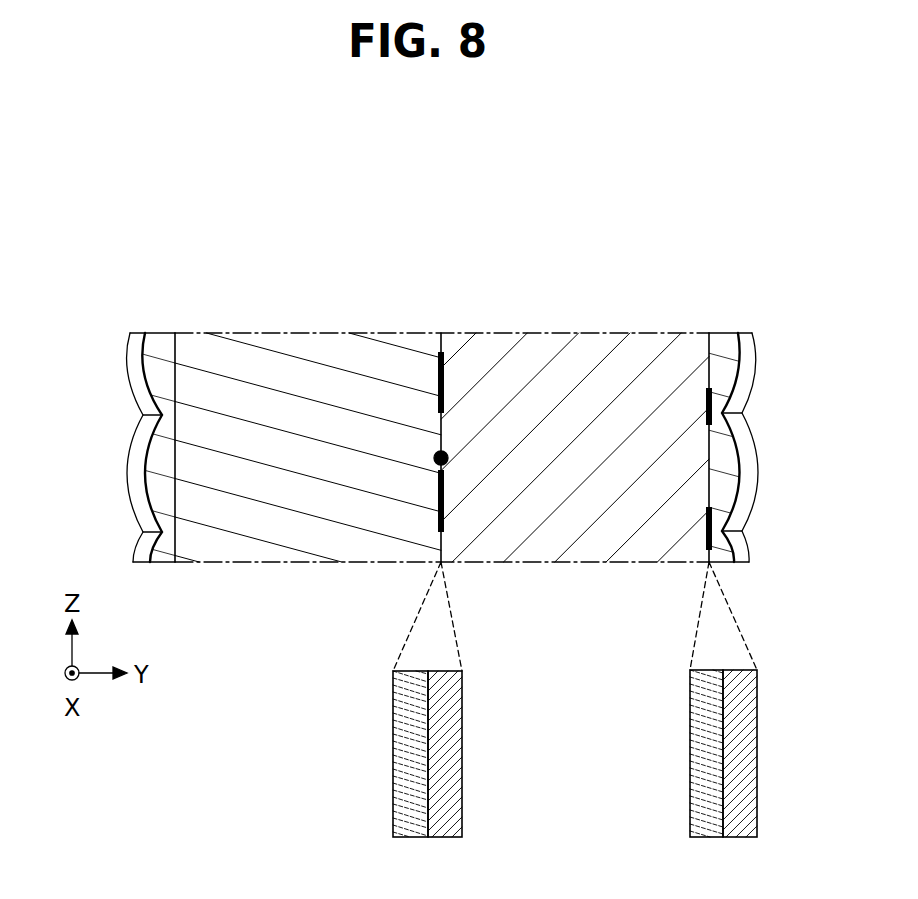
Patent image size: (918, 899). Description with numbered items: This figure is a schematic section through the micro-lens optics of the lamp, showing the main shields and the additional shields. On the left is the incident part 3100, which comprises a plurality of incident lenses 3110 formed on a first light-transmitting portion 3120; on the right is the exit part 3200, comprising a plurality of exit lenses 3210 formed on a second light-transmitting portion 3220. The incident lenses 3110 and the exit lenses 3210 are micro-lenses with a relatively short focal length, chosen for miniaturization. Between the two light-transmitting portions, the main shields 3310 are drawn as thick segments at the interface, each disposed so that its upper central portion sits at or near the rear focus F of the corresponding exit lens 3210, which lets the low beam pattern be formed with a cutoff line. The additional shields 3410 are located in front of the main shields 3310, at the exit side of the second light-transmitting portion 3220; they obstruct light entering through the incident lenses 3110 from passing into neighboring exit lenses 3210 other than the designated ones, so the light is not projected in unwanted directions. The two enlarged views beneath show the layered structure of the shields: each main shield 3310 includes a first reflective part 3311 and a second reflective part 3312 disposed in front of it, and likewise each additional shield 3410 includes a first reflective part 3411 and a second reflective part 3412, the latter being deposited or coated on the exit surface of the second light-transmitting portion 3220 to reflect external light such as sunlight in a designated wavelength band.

The incident part 3100 is at (257, 282).
The incident lenses 3110 is at (163, 348).
The first light-transmitting portion 3120 is at (272, 348).
The exit part 3200 is at (712, 282).
The exit lenses 3210 is at (727, 348).
The second light-transmitting portion 3220 is at (616, 348).
The main shields 3310 is at (443, 520).
The first reflective part 3311 is at (412, 826).
The second reflective part 3312 is at (442, 826).
The additional shields 3410 is at (707, 522).
The first reflective part 3411 is at (708, 826).
The second reflective part 3412 is at (740, 826).
The rear focus F is at (437, 462).